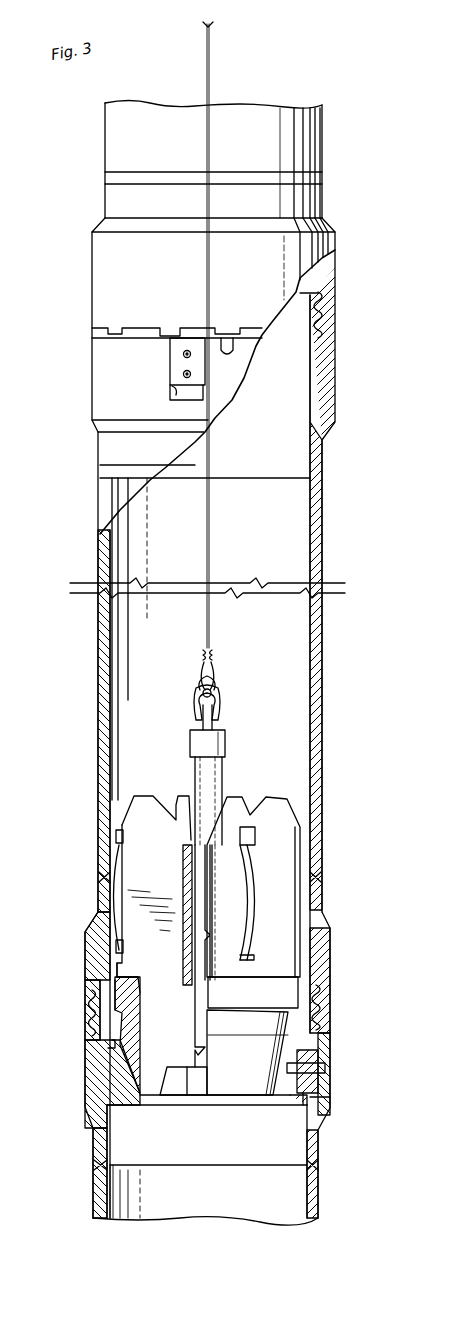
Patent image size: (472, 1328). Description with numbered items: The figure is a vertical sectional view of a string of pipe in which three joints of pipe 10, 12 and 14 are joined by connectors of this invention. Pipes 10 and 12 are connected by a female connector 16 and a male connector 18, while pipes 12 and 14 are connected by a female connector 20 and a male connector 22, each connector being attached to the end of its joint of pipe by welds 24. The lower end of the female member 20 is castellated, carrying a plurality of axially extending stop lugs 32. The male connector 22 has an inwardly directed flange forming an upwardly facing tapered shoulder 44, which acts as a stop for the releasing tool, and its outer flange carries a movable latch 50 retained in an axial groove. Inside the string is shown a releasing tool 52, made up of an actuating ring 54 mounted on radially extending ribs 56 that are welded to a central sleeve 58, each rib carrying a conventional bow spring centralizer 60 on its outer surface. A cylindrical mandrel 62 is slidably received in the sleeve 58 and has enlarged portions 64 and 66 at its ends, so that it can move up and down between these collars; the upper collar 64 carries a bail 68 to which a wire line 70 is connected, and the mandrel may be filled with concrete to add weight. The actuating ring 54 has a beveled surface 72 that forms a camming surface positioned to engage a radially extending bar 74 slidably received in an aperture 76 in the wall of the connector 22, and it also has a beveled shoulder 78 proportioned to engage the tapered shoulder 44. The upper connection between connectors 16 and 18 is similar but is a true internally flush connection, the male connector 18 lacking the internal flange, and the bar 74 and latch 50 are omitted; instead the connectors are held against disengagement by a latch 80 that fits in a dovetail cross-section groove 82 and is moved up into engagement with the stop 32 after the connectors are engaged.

The pipe 10 is at (325, 139).
The pipe 12 is at (324, 566).
The pipe 14 is at (320, 1190).
The female connector 16 is at (338, 243).
The male connector 18 is at (338, 375).
The female connector 20 is at (86, 940).
The male connector 22 is at (84, 1093).
The welds 24 is at (323, 183).
The stop lugs 32 is at (167, 328).
The tapered shoulder 44 is at (112, 1045).
The latch 50 is at (324, 1047).
The releasing tool 52 is at (226, 766).
The actuating ring 54 is at (125, 987).
The ribs 56 is at (146, 812).
The central sleeve 58 is at (183, 855).
The bow spring centralizer 60 is at (255, 892).
The cylindrical mandrel 62 is at (194, 770).
The enlarged portion 64 is at (226, 740).
The enlarged portion 66 is at (202, 1087).
The bail 68 is at (197, 688).
The wire line 70 is at (211, 541).
The beveled surface 72 is at (125, 1087).
The radially extending bar 74 is at (305, 1070).
The aperture 76 is at (283, 1079).
The beveled shoulder 78 is at (322, 1013).
The latch 80 is at (172, 359).
The dovetail groove 82 is at (170, 391).